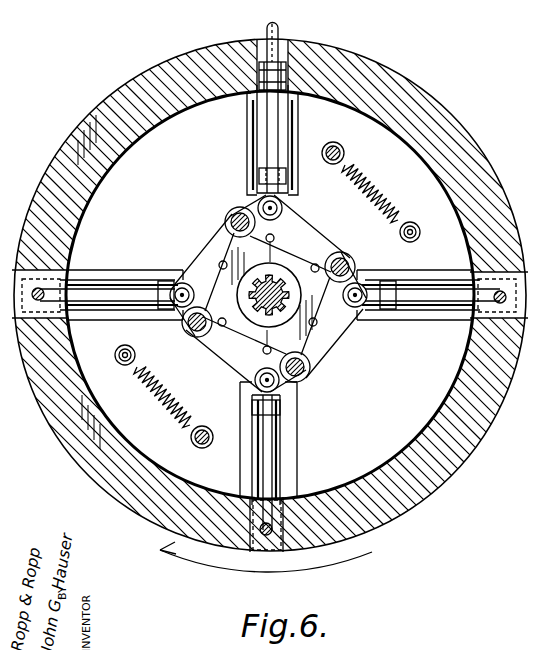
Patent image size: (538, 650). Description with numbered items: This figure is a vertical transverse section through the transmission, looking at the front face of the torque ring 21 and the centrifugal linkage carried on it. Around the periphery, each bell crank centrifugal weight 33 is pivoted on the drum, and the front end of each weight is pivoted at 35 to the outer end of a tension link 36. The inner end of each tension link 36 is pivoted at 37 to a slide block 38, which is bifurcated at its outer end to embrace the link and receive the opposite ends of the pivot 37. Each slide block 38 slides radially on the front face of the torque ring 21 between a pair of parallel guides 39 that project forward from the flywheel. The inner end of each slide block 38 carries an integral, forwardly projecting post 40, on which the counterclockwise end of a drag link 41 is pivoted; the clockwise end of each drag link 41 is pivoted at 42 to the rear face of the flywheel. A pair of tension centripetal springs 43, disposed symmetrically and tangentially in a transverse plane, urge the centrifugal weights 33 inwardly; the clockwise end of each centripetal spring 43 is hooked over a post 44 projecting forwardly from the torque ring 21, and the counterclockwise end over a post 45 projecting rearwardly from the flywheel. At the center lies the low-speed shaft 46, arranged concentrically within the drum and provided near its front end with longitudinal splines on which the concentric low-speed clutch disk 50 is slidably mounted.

The torque ring 21 is at (360, 60).
The bell crank centrifugal weight 33 is at (452, 336).
The pivot 35 is at (272, 58).
The tension link 36 is at (257, 122).
The pivot 37 is at (262, 176).
The slide block 38 is at (259, 168).
The parallel guides 39 is at (254, 137).
The post 40 is at (260, 205).
The drag link 41 is at (305, 232).
The pivot 42 is at (346, 260).
The centripetal spring 43 is at (388, 203).
The post 44 is at (402, 237).
The post 45 is at (344, 153).
The low-speed shaft 46 is at (284, 286).
The low-speed clutch disk 50 is at (252, 320).